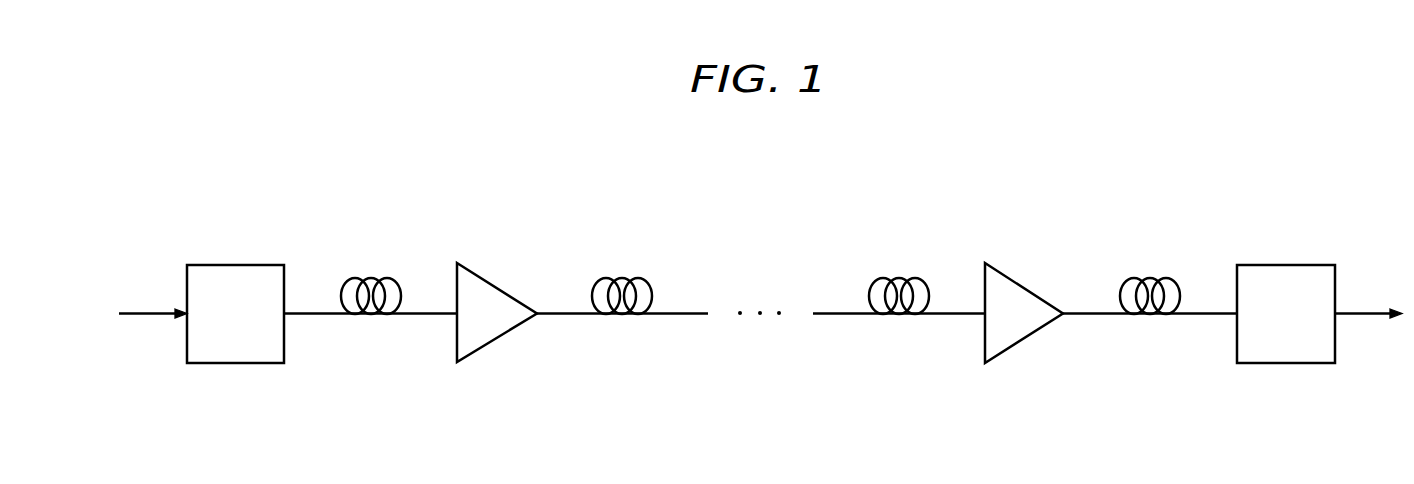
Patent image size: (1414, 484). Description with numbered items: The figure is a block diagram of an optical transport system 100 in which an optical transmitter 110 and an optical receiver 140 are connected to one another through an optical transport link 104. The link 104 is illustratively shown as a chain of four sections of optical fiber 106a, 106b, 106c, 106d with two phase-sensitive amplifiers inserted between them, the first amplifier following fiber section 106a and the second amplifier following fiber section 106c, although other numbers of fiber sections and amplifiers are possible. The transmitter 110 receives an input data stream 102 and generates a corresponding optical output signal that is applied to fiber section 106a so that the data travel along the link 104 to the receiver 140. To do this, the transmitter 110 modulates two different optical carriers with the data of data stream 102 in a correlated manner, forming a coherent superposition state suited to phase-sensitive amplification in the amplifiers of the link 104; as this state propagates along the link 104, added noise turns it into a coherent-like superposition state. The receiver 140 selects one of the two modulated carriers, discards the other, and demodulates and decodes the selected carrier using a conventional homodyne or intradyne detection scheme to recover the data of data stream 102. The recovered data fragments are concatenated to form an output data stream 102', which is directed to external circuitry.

The optical transport system 100 is at (778, 157).
The input data stream 102 is at (153, 287).
The output data stream 102' is at (1368, 287).
The optical transport link 104 is at (735, 395).
The section of optical fiber 106a is at (372, 273).
The section of optical fiber 106b is at (623, 273).
The section of optical fiber 106c is at (902, 273).
The section of optical fiber 106d is at (1152, 273).
The optical transmitter 110 is at (237, 263).
The optical receiver 140 is at (1288, 263).